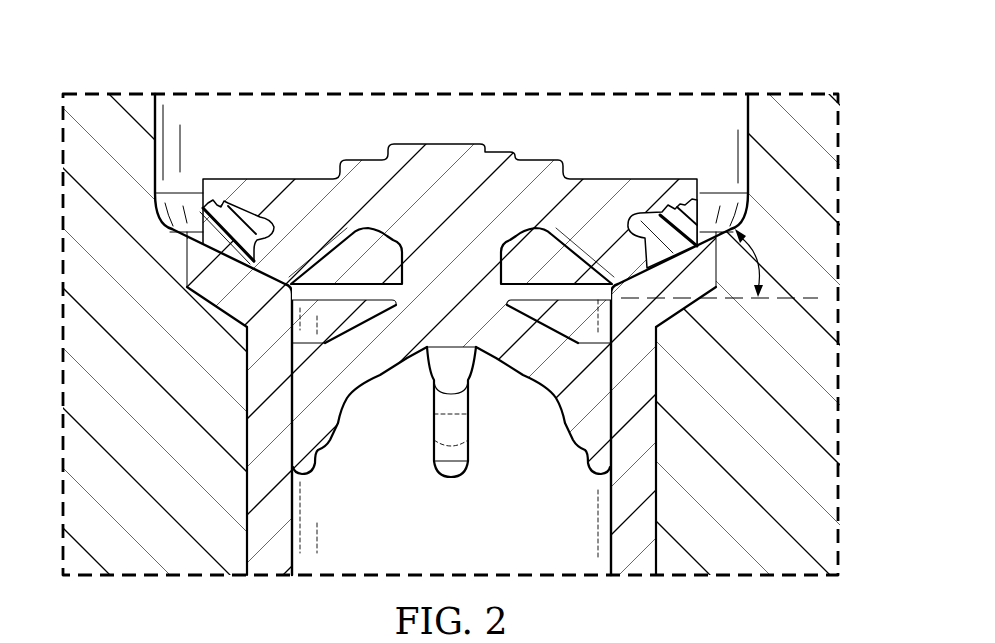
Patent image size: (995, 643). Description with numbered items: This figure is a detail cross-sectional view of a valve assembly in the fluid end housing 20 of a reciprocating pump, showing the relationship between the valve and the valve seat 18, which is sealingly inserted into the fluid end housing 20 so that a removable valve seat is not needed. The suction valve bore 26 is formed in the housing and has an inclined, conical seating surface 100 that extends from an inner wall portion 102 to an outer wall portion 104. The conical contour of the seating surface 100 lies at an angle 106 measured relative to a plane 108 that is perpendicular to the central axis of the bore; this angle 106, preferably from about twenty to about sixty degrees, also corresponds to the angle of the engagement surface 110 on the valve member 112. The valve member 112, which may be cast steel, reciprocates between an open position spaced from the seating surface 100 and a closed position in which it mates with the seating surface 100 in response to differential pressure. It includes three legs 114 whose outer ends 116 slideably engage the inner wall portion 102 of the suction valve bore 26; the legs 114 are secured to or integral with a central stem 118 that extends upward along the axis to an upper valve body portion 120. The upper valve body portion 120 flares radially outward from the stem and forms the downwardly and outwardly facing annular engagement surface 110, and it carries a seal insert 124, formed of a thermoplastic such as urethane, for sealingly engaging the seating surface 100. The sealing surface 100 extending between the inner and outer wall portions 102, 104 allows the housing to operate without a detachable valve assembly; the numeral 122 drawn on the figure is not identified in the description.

The fluid end housing 20 is at (257, 68).
The valve seat 18 is at (245, 514).
The suction valve bore 26 is at (293, 497).
The seating surface 100 is at (737, 228).
The inner wall portion 102 is at (611, 503).
The outer wall portion 104 is at (745, 136).
The angle 106 is at (760, 263).
The plane 108 is at (784, 300).
The engagement surface 110 is at (637, 281).
The valve member 112 is at (310, 190).
The legs 114 is at (338, 423).
The outer ends 116 is at (290, 438).
The central stem 118 is at (430, 279).
The upper valve body portion 120 is at (227, 180).
The seal member 122 is at (232, 248).
The seal insert 124 is at (187, 290).